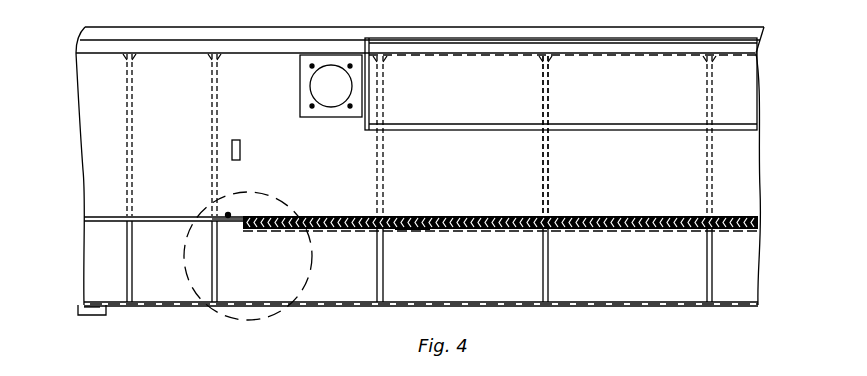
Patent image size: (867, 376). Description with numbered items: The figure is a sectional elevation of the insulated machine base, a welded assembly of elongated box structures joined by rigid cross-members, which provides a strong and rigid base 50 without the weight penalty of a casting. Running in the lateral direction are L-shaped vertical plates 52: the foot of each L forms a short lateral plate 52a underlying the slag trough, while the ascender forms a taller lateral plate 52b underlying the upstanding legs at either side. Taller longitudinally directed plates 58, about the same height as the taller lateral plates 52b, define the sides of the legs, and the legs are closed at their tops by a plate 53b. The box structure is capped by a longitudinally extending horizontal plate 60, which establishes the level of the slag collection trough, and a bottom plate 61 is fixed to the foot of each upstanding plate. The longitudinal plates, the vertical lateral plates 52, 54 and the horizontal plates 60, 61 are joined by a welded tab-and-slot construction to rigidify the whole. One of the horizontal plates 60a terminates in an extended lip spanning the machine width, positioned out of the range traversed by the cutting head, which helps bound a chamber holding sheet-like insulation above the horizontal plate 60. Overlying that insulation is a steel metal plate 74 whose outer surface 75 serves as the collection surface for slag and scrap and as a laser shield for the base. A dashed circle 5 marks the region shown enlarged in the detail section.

The conveyor apparatus 50 is at (398, 180).
The frame post 52 is at (405, 179).
The lower post section 52a is at (128, 263).
The upper post section 52b is at (128, 163).
The top rail 53b is at (668, 29).
The intermediate strut 54 is at (546, 188).
The side panel 58 is at (460, 146).
The lower longitudinal rail 60 is at (471, 232).
The lower rail end section 60a is at (148, 224).
The bottom rail 61 is at (578, 306).
The conveyor belt 74 is at (458, 216).
The belt support 75 is at (410, 216).
The detail area of FIG. 5 is at (258, 322).